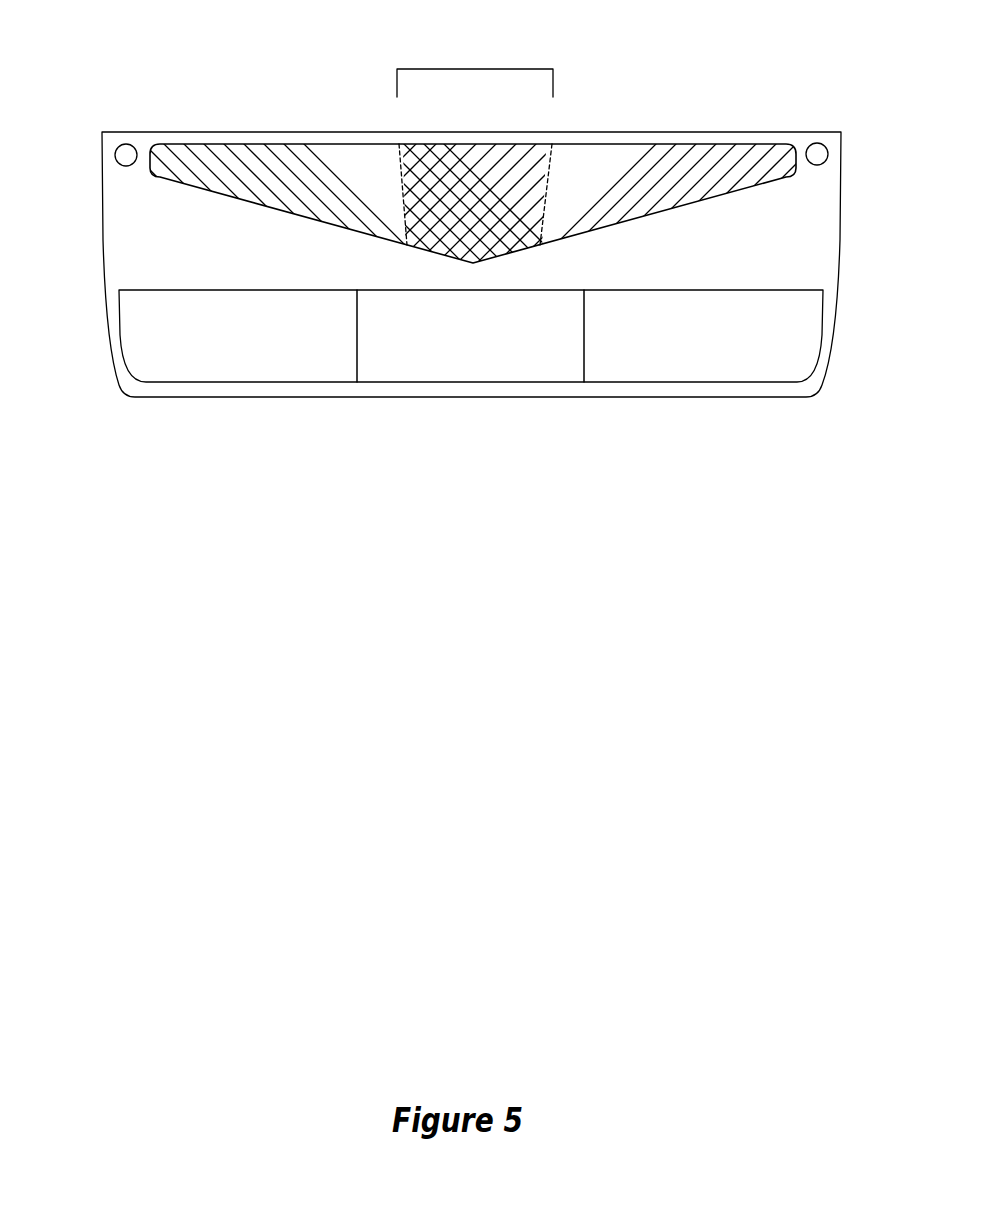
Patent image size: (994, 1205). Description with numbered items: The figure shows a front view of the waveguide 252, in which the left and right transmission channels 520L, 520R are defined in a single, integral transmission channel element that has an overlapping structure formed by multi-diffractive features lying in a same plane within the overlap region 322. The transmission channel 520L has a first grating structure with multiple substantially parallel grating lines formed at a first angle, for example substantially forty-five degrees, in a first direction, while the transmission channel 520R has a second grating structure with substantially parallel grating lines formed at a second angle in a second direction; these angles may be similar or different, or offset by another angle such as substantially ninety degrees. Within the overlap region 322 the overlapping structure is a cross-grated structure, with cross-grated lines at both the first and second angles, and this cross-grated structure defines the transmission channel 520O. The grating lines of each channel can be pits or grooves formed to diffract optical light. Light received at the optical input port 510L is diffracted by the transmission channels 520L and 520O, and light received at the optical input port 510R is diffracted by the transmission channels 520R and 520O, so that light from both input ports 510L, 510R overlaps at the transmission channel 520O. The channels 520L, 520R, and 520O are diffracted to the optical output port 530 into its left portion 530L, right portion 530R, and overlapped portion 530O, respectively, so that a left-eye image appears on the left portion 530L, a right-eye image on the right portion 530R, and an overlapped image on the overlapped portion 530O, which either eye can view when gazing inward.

The waveguide 252 is at (838, 243).
The overlap region 322 is at (477, 69).
The optical input port 510L is at (116, 147).
The optical input port 510R is at (830, 146).
The transmission channel 520L is at (257, 147).
The transmission channel 520O is at (458, 143).
The transmission channel 520R is at (685, 147).
The optical output port 530 is at (817, 345).
The left portion 530L is at (282, 336).
The overlapped portion 530O is at (470, 336).
The right portion 530R is at (650, 336).